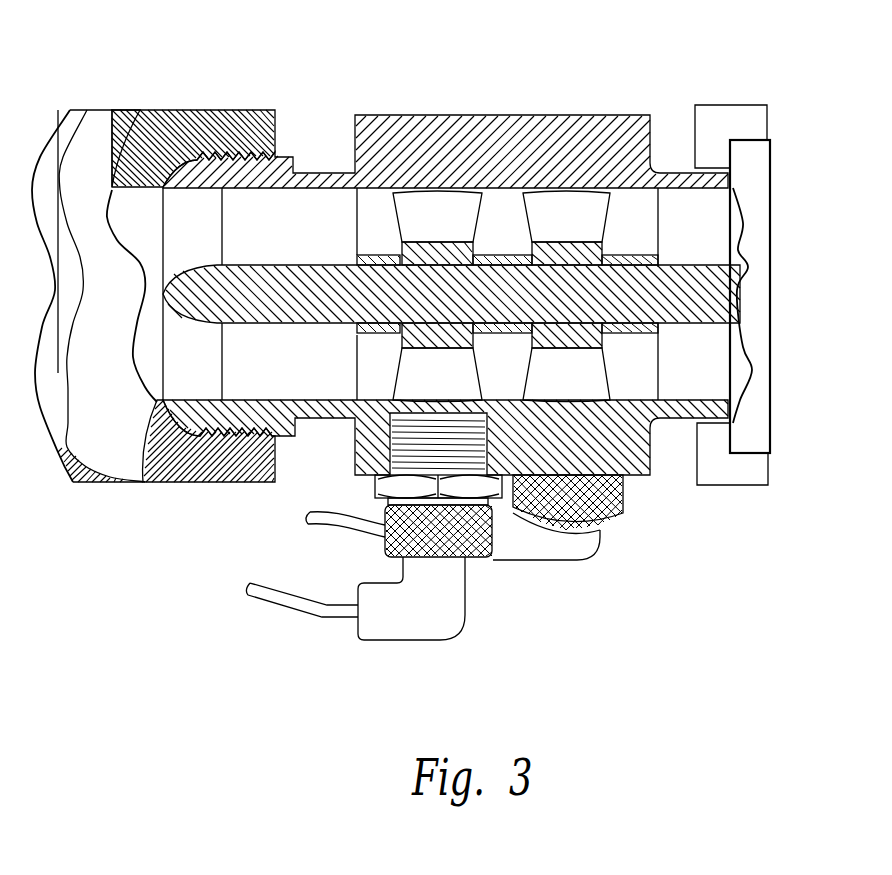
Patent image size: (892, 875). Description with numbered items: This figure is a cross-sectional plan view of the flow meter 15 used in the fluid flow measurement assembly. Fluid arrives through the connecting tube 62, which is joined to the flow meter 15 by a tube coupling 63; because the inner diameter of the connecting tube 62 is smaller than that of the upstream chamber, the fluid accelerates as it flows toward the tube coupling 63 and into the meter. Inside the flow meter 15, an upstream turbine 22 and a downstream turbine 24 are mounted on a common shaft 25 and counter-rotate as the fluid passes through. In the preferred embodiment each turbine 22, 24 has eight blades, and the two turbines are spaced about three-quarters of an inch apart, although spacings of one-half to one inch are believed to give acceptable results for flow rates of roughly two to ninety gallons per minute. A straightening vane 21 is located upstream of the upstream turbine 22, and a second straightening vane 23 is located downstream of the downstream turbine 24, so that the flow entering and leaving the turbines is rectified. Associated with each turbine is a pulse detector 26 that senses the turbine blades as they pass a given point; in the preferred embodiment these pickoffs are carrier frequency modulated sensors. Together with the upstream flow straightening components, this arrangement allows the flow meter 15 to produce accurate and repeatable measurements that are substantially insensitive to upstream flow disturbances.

The flow meter 15 is at (500, 85).
The straightening vane 21 is at (273, 378).
The upstream turbine 22 is at (357, 190).
The straightening vane 23 is at (703, 370).
The downstream turbine 24 is at (648, 190).
The shaft 25 is at (413, 312).
The pulse detector 26 is at (598, 497).
The connecting tube 62 is at (141, 118).
The tube coupling 63 is at (206, 117).